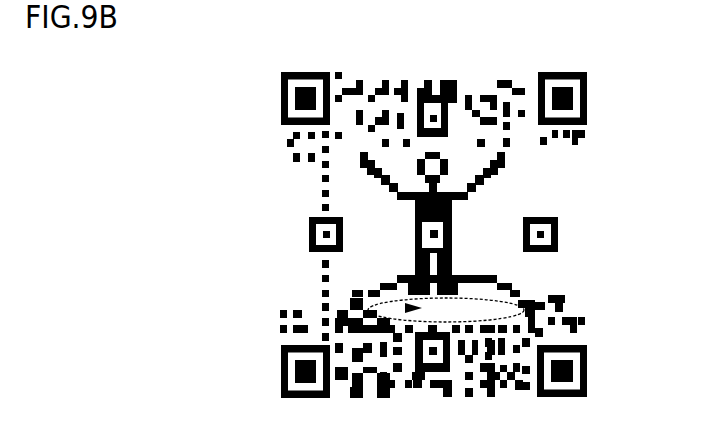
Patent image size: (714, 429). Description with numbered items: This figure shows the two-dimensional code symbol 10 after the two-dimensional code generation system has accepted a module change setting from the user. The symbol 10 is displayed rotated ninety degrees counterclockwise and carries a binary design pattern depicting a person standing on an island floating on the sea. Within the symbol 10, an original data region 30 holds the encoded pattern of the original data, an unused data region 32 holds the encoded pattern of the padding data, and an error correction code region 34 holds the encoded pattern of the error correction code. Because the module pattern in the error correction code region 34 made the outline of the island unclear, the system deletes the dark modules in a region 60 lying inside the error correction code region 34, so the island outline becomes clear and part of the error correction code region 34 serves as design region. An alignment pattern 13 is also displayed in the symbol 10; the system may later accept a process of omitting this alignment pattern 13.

The two-dimensional code symbol 10 is at (245, 105).
The alignment pattern 13 is at (430, 234).
The original data region 30 is at (590, 75).
The unused data region 32 is at (590, 293).
The error correction code region 34 is at (590, 293).
The region 60 is at (405, 308).